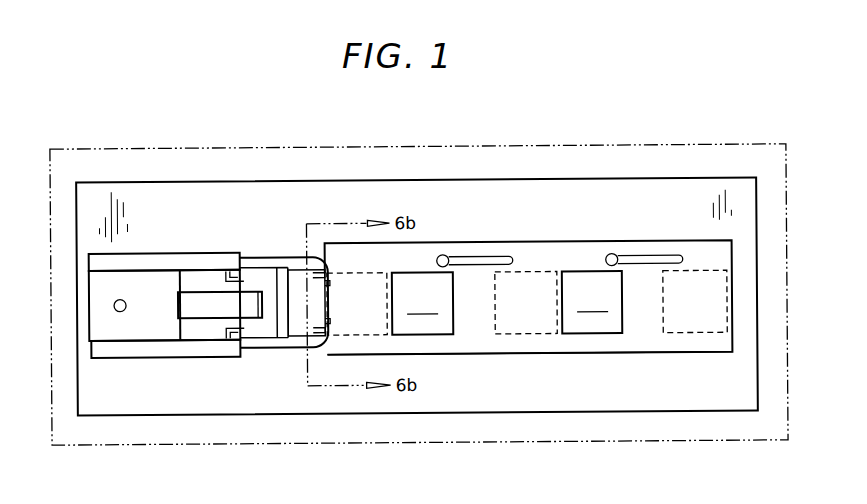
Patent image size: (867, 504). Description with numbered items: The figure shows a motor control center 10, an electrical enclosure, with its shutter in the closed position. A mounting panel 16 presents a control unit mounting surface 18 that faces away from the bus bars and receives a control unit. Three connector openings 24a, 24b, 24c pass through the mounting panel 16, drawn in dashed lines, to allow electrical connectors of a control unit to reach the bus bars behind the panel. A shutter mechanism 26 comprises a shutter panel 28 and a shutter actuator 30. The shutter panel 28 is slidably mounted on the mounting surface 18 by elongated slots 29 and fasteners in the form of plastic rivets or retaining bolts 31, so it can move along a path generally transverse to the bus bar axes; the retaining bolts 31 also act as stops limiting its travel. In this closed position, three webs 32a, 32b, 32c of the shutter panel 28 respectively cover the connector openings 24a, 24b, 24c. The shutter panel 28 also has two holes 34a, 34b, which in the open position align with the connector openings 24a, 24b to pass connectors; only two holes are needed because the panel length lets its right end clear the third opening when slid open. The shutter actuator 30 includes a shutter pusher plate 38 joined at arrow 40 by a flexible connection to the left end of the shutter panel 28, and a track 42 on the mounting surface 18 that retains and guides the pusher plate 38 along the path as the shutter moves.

The motor control center 10 is at (638, 146).
The mounting panel 16 is at (718, 179).
The control unit mounting surface 18 is at (667, 190).
The connector opening 24a is at (350, 327).
The connector opening 24b is at (610, 401).
The connector opening 24c is at (695, 335).
The shutter mechanism 26 is at (431, 205).
The shutter panel 28 is at (517, 187).
The elongated slot 29 is at (510, 256).
The shutter actuator 30 is at (171, 228).
The retaining bolt 31 is at (443, 255).
The web 32a is at (356, 271).
The web 32b is at (513, 303).
The web 32c is at (643, 310).
The hole 34a is at (422, 303).
The hole 34b is at (592, 302).
The shutter pusher plate 38 is at (260, 347).
The flexible connection 40 is at (295, 306).
The track 42 is at (146, 357).